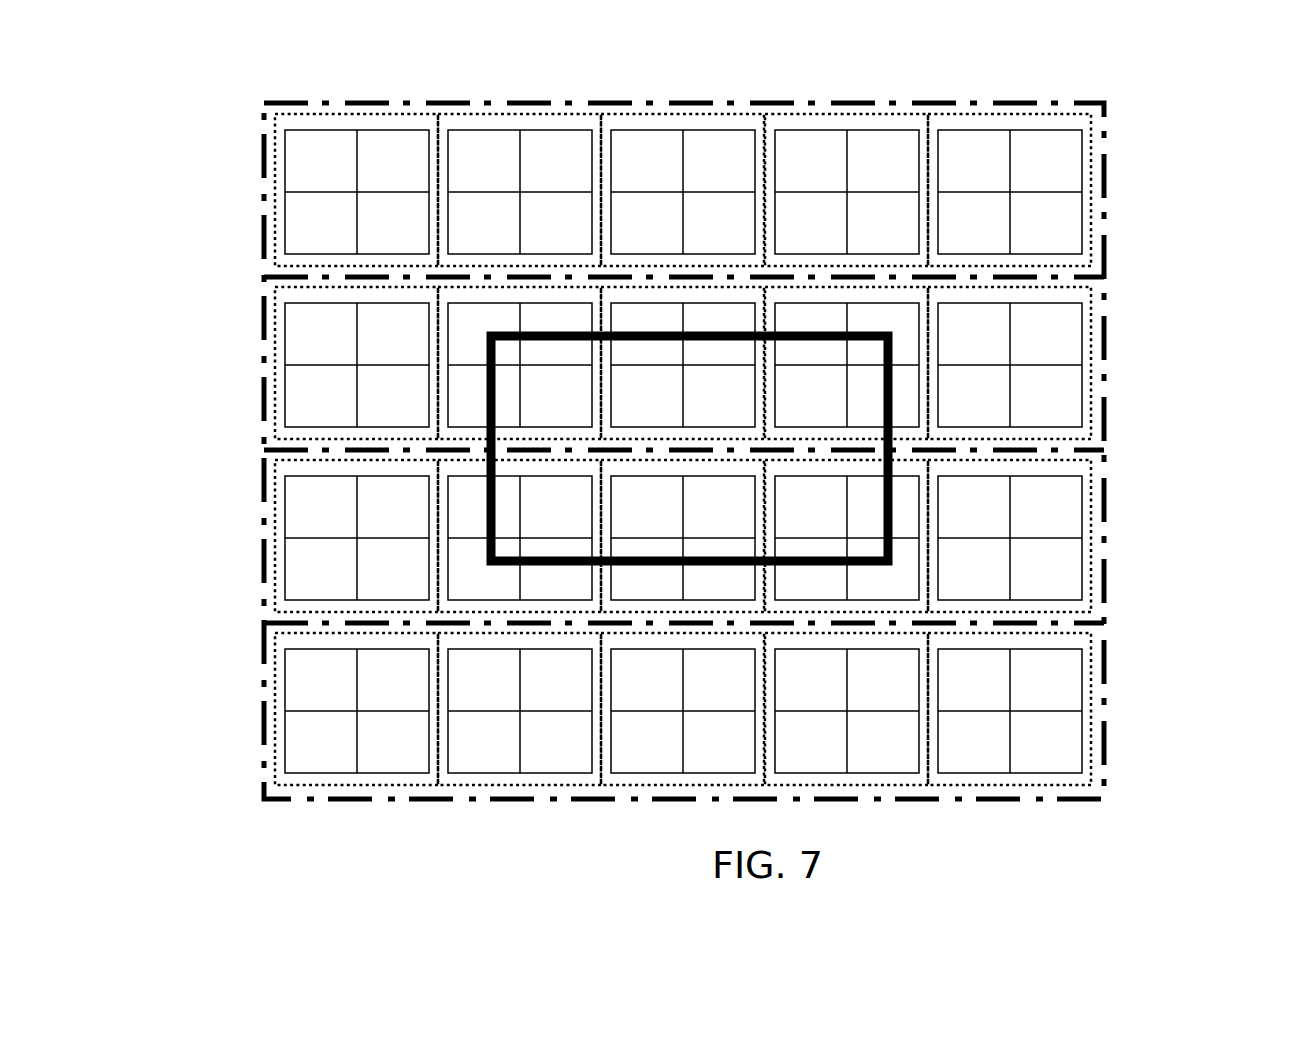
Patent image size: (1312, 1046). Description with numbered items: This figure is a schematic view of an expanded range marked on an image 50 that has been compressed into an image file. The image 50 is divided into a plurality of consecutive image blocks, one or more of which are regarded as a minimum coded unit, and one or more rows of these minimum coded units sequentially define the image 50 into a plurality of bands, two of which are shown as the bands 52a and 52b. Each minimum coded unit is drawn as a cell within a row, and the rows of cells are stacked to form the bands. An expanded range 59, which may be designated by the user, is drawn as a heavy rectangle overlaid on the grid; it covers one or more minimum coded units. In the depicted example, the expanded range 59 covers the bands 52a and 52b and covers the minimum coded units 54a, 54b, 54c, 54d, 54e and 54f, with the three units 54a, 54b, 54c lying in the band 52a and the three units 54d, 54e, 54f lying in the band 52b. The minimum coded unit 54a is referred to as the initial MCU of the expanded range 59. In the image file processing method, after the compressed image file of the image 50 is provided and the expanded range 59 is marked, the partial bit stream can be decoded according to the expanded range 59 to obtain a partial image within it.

The image 50 is at (1182, 105).
The band 52a is at (1114, 337).
The band 52b is at (1114, 510).
The minimum coded unit (MCU) 54a is at (462, 272).
The minimum coded unit (MCU) 54b is at (626, 271).
The minimum coded unit (MCU) 54c is at (788, 271).
The minimum coded unit (MCU) 54d is at (430, 496).
The minimum coded unit (MCU) 54e is at (594, 587).
The minimum coded unit (MCU) 54f is at (940, 586).
The expanded range 59 is at (492, 393).